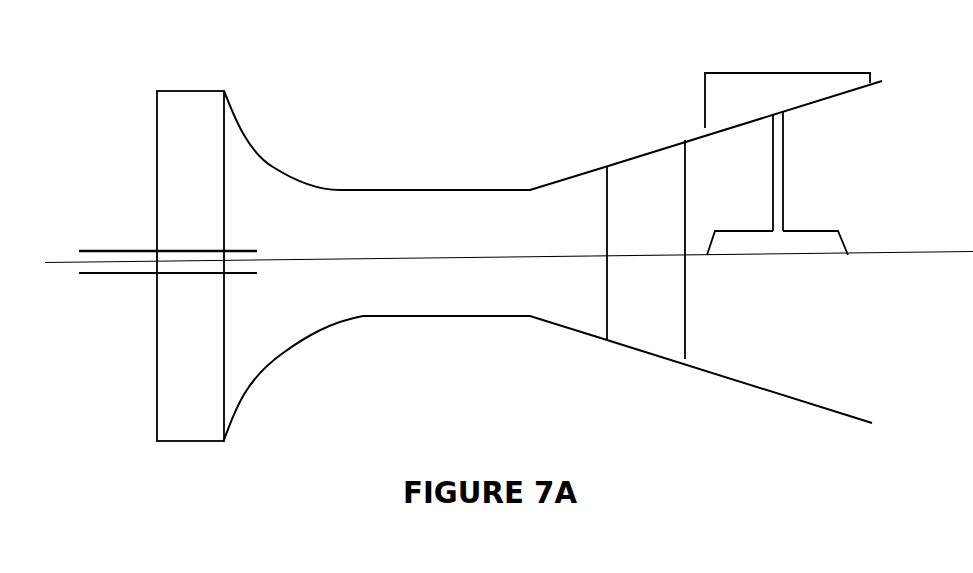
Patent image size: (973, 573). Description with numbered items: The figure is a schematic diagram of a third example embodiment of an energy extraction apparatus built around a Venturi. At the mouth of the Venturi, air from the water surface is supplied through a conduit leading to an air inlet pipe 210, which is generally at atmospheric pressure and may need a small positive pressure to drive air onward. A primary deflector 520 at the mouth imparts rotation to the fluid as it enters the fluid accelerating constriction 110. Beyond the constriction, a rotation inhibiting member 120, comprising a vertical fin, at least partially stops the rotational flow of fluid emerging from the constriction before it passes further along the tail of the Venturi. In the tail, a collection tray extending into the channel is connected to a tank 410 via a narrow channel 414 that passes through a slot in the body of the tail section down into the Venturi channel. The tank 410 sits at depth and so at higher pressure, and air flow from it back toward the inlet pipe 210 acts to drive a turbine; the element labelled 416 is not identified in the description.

The fluid accelerating constriction 110 is at (448, 322).
The rotation inhibiting member 120 is at (645, 350).
The air inlet pipe 210 is at (128, 274).
The tank 410 is at (835, 72).
The narrow channel 414 is at (783, 173).
The base / mount 416 is at (835, 230).
The primary deflector 520 is at (203, 442).